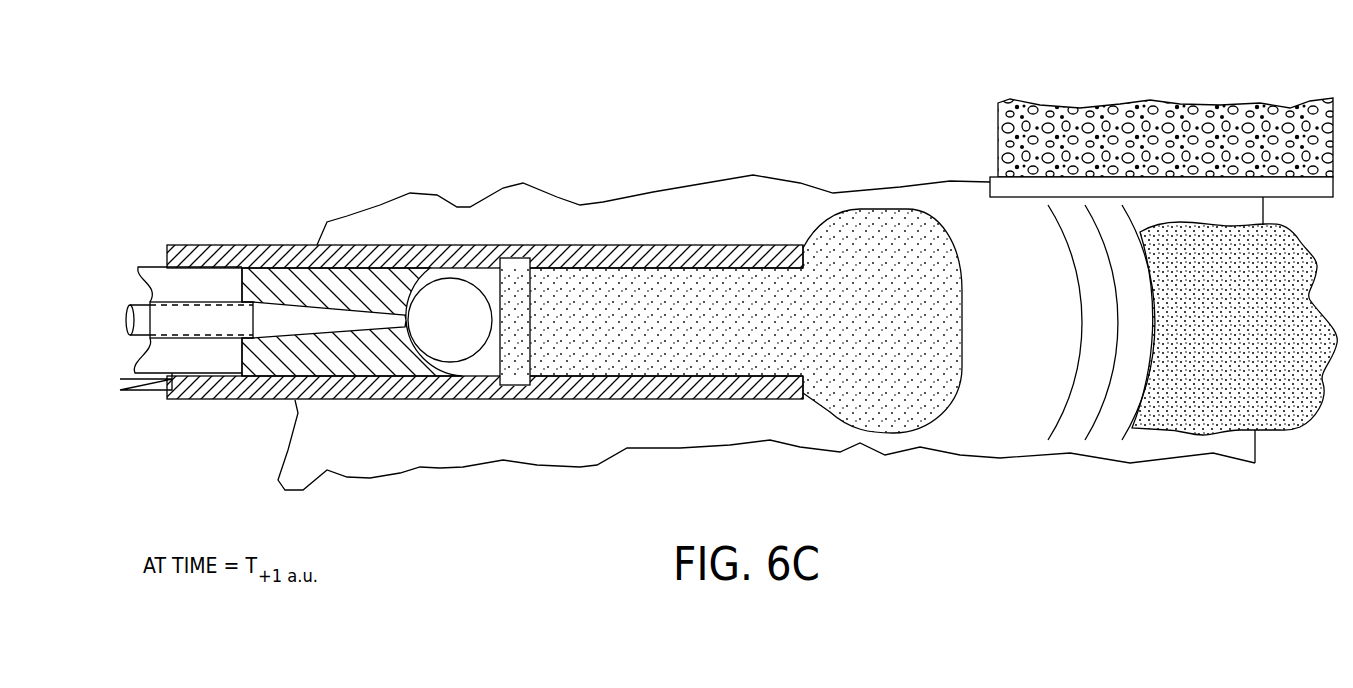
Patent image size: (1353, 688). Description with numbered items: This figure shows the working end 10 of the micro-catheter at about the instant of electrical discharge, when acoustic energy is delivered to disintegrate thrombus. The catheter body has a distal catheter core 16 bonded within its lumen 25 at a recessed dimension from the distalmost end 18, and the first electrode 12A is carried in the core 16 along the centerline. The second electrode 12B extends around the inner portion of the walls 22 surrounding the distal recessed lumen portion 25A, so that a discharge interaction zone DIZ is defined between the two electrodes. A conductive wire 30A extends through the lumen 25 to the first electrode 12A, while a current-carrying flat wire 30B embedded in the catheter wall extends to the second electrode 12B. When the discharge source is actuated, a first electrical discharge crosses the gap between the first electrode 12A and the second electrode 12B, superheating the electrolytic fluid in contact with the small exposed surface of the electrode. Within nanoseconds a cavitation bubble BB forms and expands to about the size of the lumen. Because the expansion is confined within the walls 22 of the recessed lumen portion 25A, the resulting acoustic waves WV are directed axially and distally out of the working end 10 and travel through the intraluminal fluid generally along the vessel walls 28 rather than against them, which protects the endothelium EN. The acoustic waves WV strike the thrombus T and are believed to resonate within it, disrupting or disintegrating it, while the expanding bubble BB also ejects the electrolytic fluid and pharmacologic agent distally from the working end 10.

The working end 10 is at (405, 70).
The first electrode 12A is at (367, 312).
The second electrode 12B is at (502, 397).
The distal catheter core 16 is at (285, 372).
The distalmost end 18 is at (806, 398).
The walls 22 is at (688, 370).
The lumen 25 is at (163, 282).
The distal recessed lumen portion 25A is at (597, 362).
The vessel walls 28 is at (1197, 123).
The conductive wire 30A is at (128, 330).
The flat wire 30B is at (133, 392).
The gas bubble BB is at (448, 300).
The discharge interaction zone DIZ is at (487, 312).
The endothelium EN is at (1005, 185).
The thrombus T is at (1190, 243).
The acoustic waves WV is at (1093, 417).